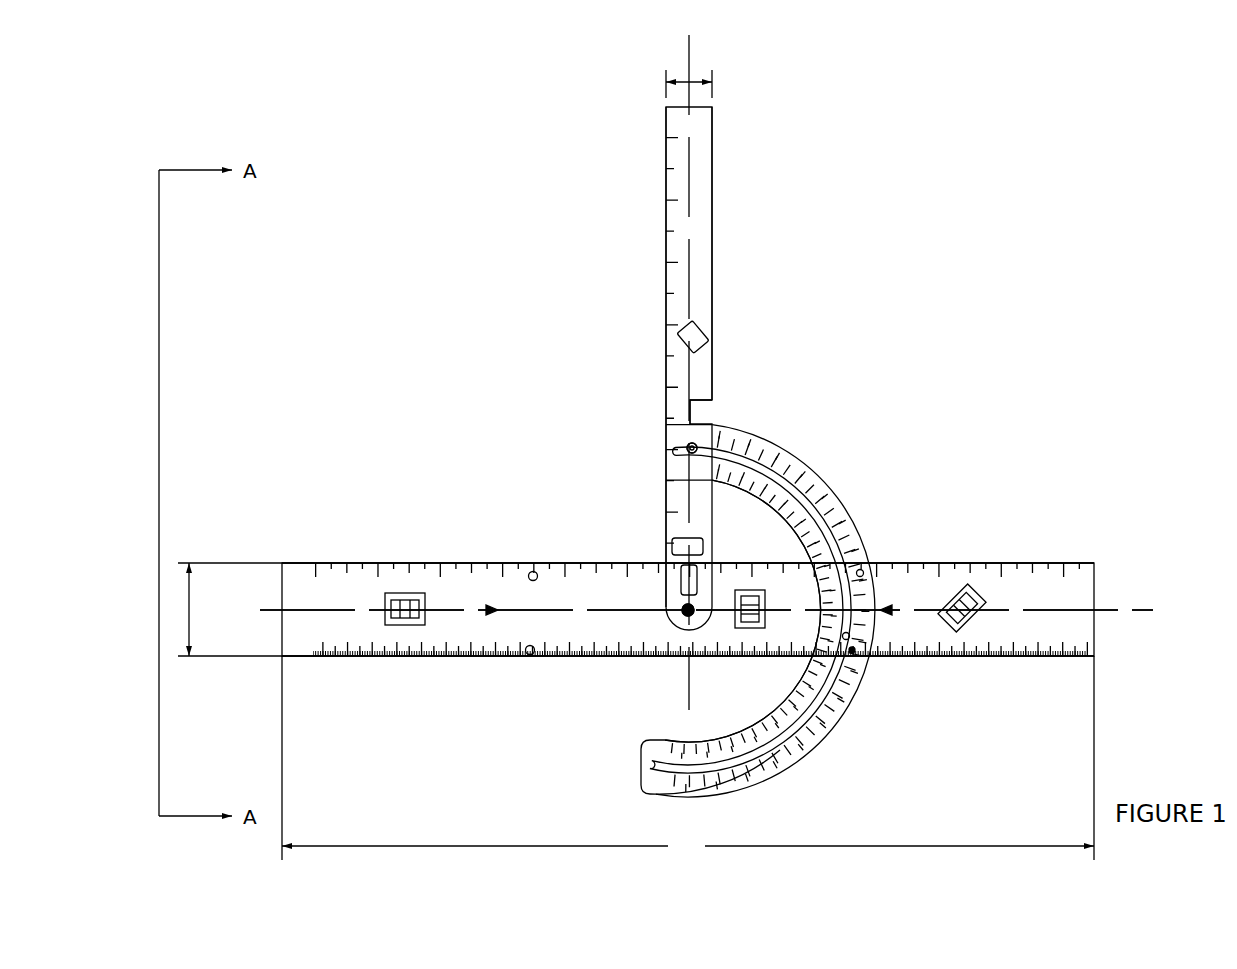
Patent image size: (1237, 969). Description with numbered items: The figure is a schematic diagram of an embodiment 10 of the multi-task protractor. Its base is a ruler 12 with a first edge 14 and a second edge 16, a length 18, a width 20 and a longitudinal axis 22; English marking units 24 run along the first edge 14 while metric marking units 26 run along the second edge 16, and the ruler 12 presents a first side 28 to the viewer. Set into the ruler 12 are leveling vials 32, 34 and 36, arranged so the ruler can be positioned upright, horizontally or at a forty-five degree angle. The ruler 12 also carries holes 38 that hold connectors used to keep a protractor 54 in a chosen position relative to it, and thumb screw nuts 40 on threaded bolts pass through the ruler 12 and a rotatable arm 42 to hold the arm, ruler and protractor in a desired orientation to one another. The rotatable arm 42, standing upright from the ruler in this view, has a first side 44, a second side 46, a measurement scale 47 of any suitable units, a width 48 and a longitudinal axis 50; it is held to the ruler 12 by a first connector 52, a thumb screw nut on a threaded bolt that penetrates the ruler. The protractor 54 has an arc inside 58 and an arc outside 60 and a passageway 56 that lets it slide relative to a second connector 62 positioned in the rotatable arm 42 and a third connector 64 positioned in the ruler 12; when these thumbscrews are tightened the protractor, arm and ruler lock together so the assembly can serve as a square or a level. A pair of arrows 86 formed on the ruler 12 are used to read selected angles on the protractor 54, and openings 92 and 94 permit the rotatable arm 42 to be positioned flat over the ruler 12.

The multi-task protractor 10 is at (943, 313).
The ruler 12 is at (1098, 652).
The first edge 14 is at (1085, 562).
The second edge 16 is at (1070, 658).
The length 18 is at (688, 758).
The width 20 is at (252, 604).
The longitudinal axis 22 is at (1122, 606).
The English marking units 24 is at (1046, 562).
The metric marking units 26 is at (1016, 658).
The first side 28 is at (610, 602).
The leveling vial 32 is at (970, 588).
The leveling vial 34 is at (700, 434).
The leveling vial 36 is at (393, 592).
The holes 38 is at (528, 572).
The thumb screw nuts 40 is at (686, 441).
The rotatable arm 42 is at (714, 155).
The first side 44 is at (714, 272).
The second side 46 is at (664, 190).
The measurement scale 47 is at (664, 265).
The width 48 is at (752, 60).
The longitudinal axis 50 is at (686, 68).
The first connector 52 is at (686, 613).
The protractor 54 is at (826, 472).
The passageway 56 is at (784, 736).
The arc inside 58 is at (758, 726).
The arc outside 60 is at (736, 796).
The second connector 62 is at (689, 447).
The third connector 64 is at (853, 652).
The arrows 86 is at (488, 612).
The opening 92 is at (706, 332).
The opening 94 is at (672, 545).